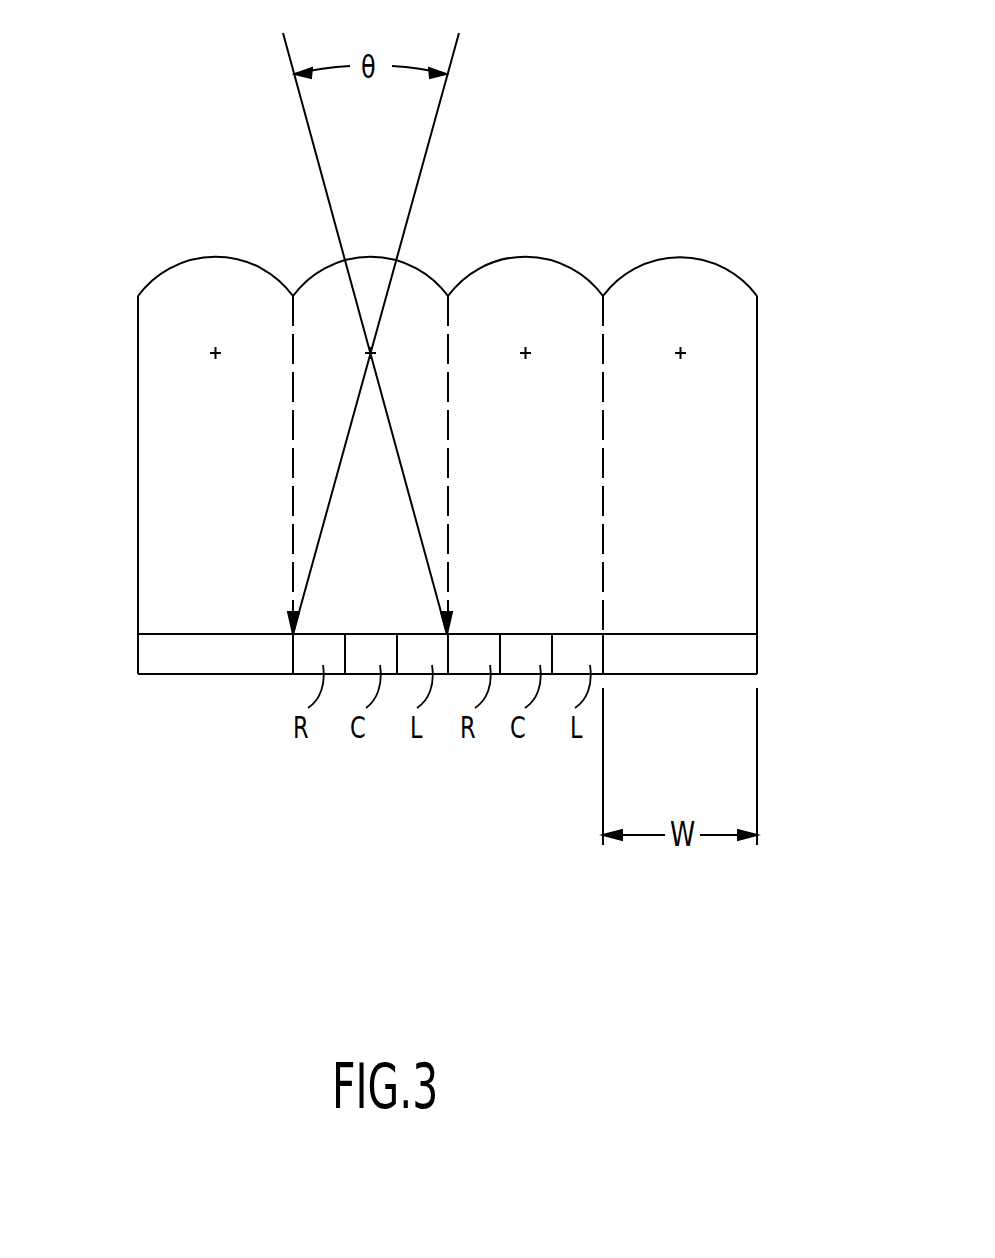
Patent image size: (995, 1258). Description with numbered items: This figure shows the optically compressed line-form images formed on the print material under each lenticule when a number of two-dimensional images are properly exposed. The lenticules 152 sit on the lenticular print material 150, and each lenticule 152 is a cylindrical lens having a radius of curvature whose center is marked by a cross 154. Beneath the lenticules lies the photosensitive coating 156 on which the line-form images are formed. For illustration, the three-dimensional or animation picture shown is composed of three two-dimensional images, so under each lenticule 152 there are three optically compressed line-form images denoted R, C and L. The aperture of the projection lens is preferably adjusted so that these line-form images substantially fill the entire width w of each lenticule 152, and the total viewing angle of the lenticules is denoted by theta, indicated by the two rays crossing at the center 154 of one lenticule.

The lenticular print material 150 is at (793, 550).
The lenticule 152 is at (203, 270).
The center of radius of curvature 154 is at (211, 358).
The photosensitive coating 156 is at (146, 654).